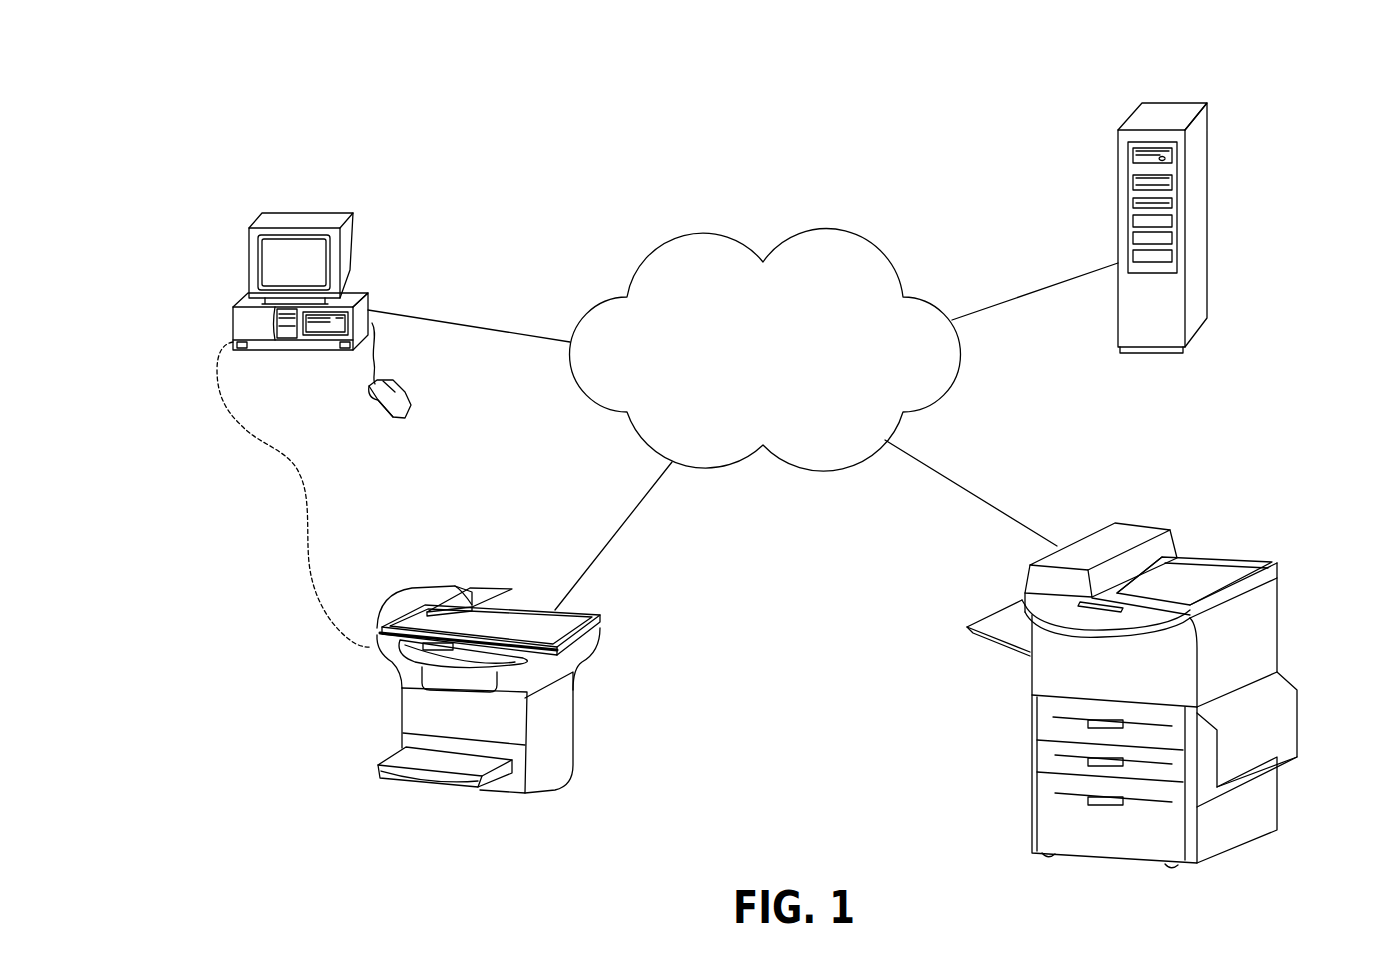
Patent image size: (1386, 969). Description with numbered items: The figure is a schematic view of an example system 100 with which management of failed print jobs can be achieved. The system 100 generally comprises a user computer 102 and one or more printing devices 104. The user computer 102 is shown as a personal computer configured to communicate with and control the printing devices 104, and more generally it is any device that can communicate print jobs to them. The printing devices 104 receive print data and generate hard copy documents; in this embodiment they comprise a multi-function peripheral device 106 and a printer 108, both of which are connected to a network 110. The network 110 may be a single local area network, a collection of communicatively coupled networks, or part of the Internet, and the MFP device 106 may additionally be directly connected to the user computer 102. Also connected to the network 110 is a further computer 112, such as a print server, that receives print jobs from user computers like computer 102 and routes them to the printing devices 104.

The system 100 is at (178, 100).
The user computer 102 is at (348, 243).
The printing devices 104 is at (665, 605).
The multi-function peripheral device 106 is at (560, 750).
The printer 108 is at (1270, 793).
The network 110 is at (779, 383).
The computer 112 is at (1200, 134).